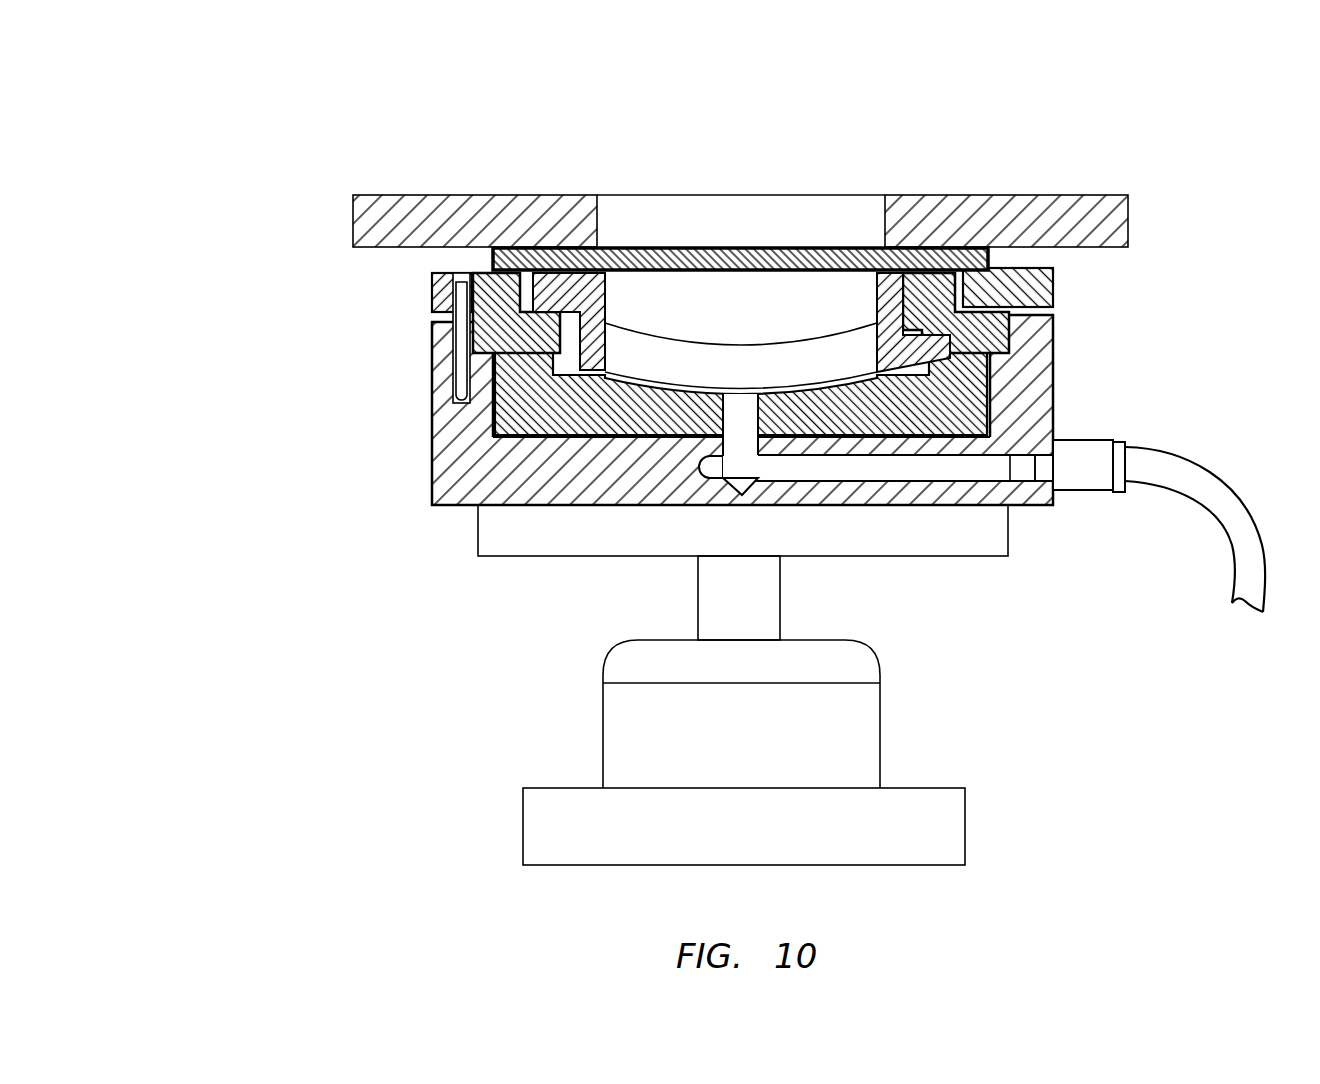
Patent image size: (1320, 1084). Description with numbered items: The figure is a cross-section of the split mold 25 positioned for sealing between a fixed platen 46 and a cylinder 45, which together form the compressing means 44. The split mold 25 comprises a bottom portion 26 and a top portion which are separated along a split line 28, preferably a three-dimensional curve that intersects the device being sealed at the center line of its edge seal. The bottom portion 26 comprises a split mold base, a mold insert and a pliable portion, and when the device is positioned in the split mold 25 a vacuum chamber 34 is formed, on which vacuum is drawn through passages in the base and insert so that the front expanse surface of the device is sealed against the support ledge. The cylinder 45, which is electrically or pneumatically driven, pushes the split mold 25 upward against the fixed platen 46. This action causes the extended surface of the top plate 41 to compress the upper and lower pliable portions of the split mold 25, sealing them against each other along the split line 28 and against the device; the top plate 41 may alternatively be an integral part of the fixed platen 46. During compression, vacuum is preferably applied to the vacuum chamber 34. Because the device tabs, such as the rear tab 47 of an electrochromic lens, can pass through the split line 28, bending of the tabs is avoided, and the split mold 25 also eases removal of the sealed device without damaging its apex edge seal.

The split mold 25 is at (410, 449).
The bottom portion 26 is at (430, 370).
The split line 28 is at (515, 338).
The vacuum chamber 34 is at (834, 403).
The top plate 41 is at (618, 245).
The compressing means 44 is at (452, 827).
The cylinder 45 is at (600, 754).
The fixed platen 46 is at (912, 188).
The rear tab 47 is at (910, 262).